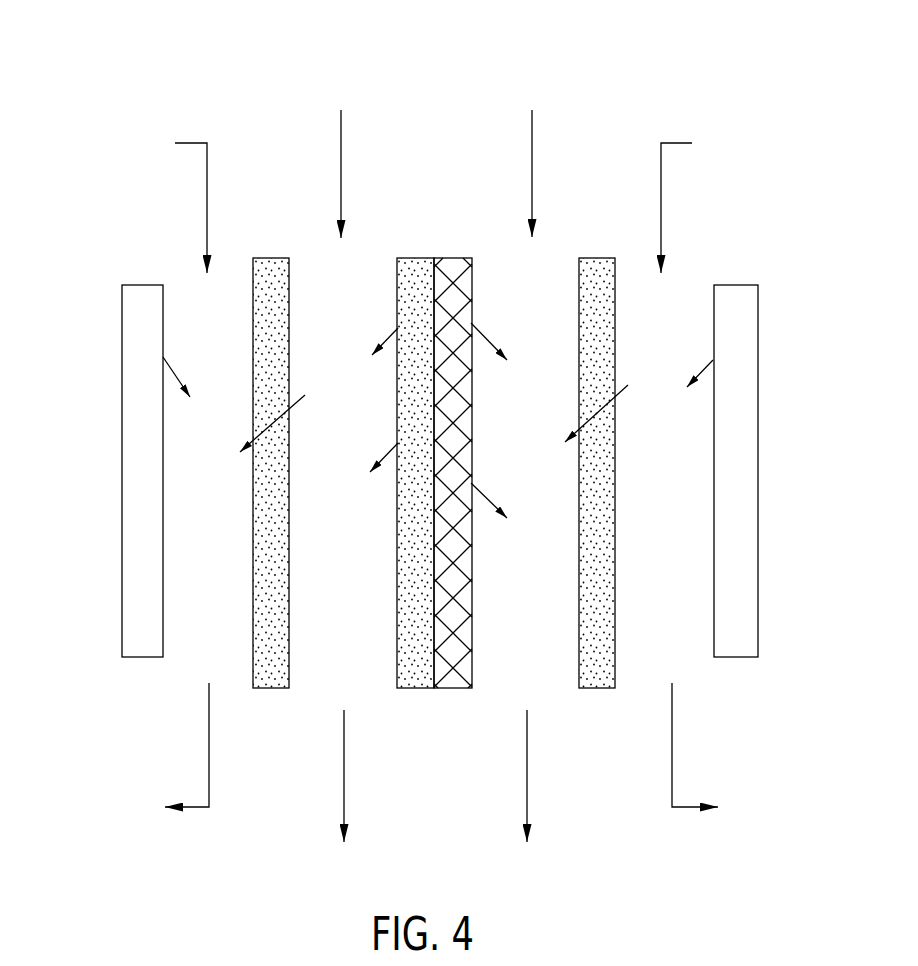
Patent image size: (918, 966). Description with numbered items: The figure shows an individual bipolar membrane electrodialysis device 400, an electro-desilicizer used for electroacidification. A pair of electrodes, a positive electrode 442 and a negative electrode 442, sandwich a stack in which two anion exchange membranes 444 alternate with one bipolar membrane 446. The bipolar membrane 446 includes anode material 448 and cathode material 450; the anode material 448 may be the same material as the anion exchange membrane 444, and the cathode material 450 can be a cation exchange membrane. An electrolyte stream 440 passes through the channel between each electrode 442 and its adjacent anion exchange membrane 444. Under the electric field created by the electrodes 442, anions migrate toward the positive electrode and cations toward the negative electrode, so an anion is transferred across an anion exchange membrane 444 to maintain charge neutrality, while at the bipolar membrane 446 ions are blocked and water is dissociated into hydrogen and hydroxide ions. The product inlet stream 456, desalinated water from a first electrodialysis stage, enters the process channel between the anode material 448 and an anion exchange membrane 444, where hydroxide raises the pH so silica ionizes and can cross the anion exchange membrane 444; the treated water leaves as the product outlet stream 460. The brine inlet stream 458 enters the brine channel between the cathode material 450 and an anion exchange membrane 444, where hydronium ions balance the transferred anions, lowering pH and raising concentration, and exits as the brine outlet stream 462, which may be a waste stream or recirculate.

The bipolar membrane electrodialysis device 400 is at (152, 84).
The electrolyte stream 440 is at (207, 172).
The electrode 442 is at (143, 285).
The anion exchange membrane 444 is at (273, 258).
The bipolar membrane 446 is at (434, 449).
The anode material 448 is at (403, 296).
The cathode material 450 is at (463, 297).
The product inlet stream 456 is at (341, 140).
The brine inlet stream 458 is at (532, 140).
The product outlet stream 460 is at (344, 783).
The brine outlet stream 462 is at (527, 783).